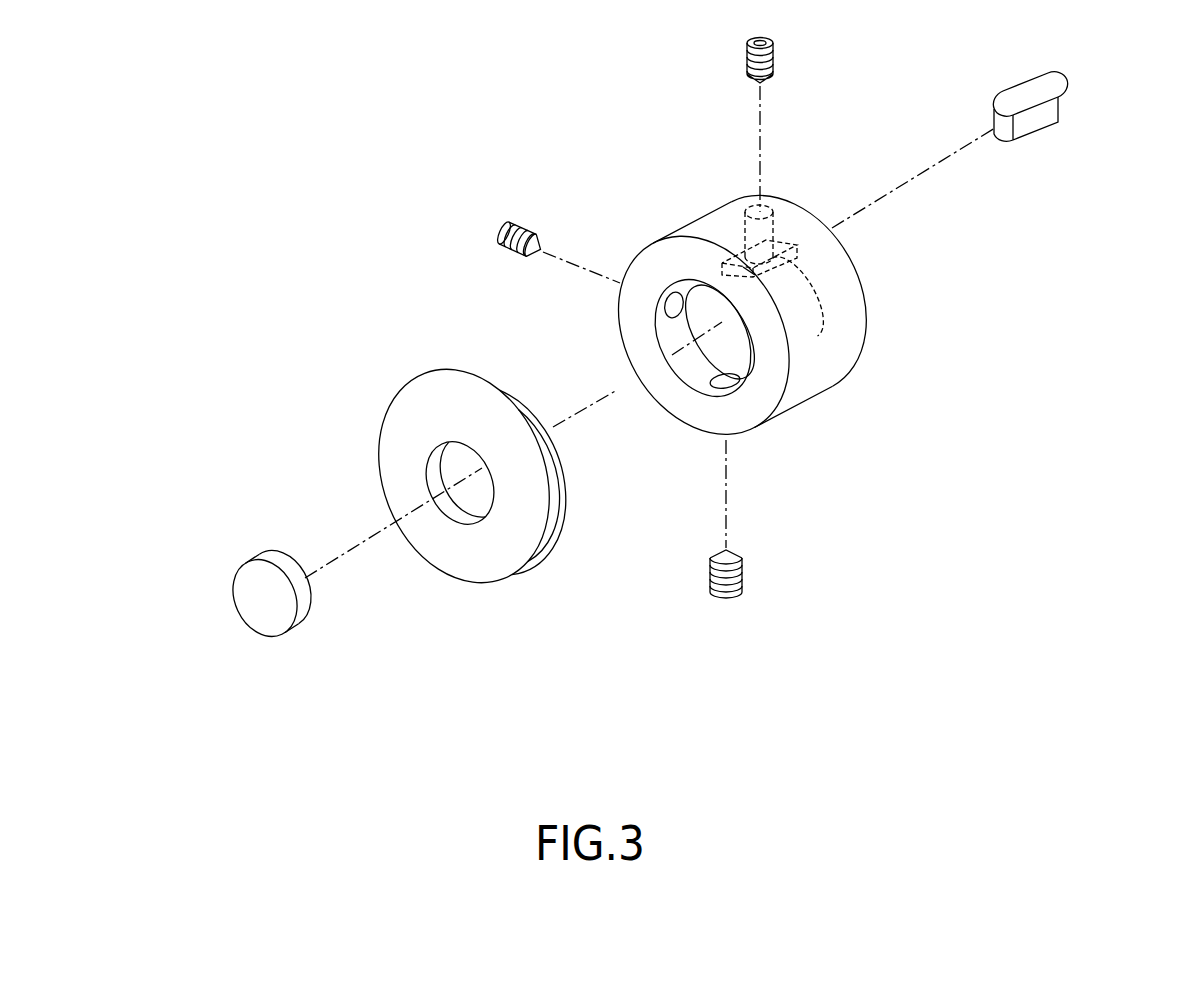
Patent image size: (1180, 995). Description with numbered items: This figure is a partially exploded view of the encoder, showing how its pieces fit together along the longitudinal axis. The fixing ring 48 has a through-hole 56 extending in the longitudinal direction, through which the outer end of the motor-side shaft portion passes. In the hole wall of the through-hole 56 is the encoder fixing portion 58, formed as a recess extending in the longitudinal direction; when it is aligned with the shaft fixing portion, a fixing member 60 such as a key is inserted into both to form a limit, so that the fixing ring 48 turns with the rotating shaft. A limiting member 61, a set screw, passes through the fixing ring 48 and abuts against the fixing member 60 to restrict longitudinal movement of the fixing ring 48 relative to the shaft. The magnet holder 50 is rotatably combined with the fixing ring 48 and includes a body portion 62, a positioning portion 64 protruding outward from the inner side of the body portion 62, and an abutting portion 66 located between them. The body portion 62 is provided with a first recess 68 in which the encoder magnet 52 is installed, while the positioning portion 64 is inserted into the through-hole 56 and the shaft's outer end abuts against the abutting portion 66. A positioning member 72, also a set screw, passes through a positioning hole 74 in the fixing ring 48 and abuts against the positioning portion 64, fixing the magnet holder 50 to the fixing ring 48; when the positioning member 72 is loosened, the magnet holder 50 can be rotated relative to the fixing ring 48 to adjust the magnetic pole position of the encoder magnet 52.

The fixing ring 48 is at (800, 370).
The magnet holder 50 is at (543, 550).
The encoder magnet 52 is at (250, 602).
The through-hole 56 is at (718, 316).
The encoder fixing portion 58 is at (797, 246).
The fixing member 60 is at (1037, 118).
The limiting member 61 is at (775, 52).
The body portion 62 is at (453, 548).
The positioning portion 64 is at (560, 458).
The abutting portion 66 is at (460, 464).
The first recess 68 is at (432, 520).
The positioning member 72 is at (522, 222).
The positioning hole 74 is at (675, 304).